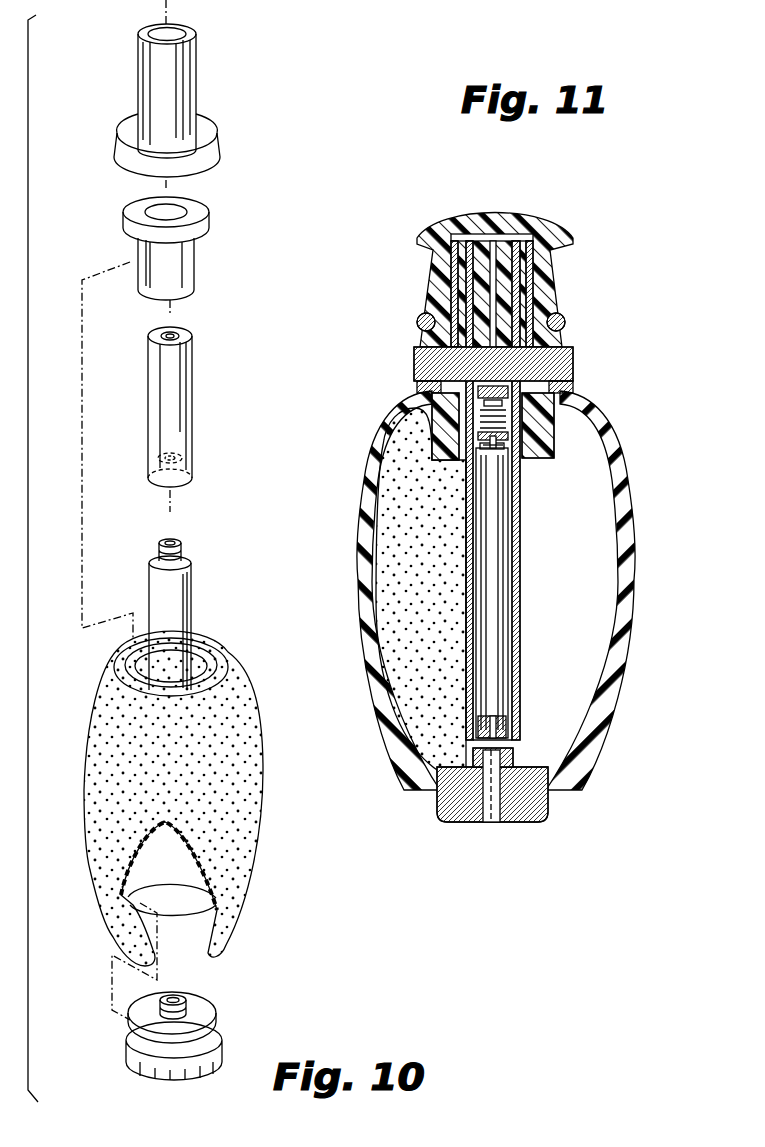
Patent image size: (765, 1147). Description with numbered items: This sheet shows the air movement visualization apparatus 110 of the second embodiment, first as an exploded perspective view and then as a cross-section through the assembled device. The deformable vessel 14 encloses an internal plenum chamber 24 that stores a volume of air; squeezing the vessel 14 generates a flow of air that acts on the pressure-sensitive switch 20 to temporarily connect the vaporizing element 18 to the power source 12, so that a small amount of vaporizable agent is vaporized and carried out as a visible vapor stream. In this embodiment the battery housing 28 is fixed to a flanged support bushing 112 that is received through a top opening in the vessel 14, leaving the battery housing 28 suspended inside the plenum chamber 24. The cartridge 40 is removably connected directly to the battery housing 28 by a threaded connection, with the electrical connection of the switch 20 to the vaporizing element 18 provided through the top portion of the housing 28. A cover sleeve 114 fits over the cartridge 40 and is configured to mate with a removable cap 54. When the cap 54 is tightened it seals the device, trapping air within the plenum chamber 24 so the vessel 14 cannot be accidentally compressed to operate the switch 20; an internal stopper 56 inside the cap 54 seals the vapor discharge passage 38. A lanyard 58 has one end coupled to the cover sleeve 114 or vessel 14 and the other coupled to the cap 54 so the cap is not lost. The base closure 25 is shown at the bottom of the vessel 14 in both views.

In FIG. 11, the air movement visualization apparatus 110 is at (385, 232).
In FIG. 11, the power source 12 is at (497, 562).
In FIG. 10, the vessel 14 is at (104, 700).
In FIG. 11, the vessel 14 is at (604, 425).
In FIG. 11, the vaporizing element 18 is at (495, 386).
In FIG. 11, the switch 20 is at (420, 395).
In FIG. 10, the plenum chamber 24 is at (182, 865).
In FIG. 11, the plenum chamber 24 is at (572, 612).
In FIG. 10, the base cap 25 is at (128, 1058).
In FIG. 11, the base cap 25 is at (524, 820).
In FIG. 10, the battery housing 28 is at (150, 592).
In FIG. 11, the vapor discharge passage 38 is at (520, 280).
In FIG. 10, the cartridge 40 is at (148, 398).
In FIG. 11, the removable cap 54 is at (472, 212).
In FIG. 11, the internal stopper 56 is at (498, 238).
In FIG. 11, the lanyard 58 is at (562, 318).
In FIG. 10, the flanged support bushing 112 is at (192, 272).
In FIG. 11, the flanged support bushing 112 is at (522, 458).
In FIG. 10, the cover sleeve 114 is at (138, 78).
In FIG. 11, the cover sleeve 114 is at (565, 368).